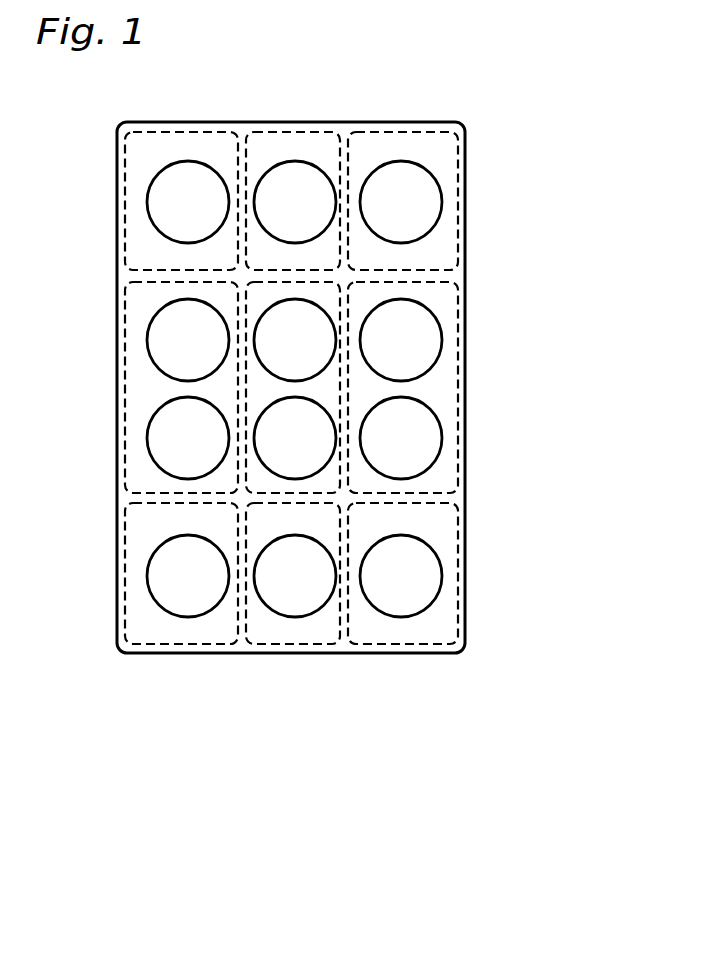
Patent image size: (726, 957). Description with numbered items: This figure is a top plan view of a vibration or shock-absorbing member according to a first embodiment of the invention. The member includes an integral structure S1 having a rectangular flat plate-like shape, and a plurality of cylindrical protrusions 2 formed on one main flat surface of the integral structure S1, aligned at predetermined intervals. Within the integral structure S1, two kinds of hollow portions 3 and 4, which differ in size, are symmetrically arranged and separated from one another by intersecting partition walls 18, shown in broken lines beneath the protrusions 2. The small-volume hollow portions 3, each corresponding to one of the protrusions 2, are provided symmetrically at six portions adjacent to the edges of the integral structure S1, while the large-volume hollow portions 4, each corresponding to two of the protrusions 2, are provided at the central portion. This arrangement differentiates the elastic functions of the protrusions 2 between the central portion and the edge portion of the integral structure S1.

The cylindrical protrusions 2 is at (403, 326).
The hollow portions 3 is at (205, 147).
The hollow portions 4 is at (298, 387).
The partition walls 18 is at (153, 271).
The integral structure S1 is at (470, 629).